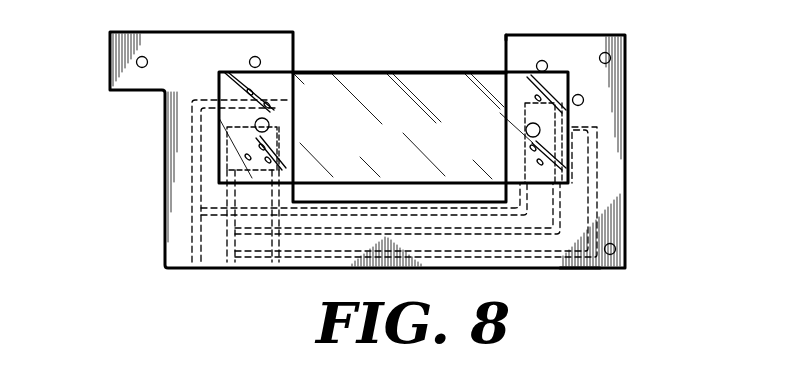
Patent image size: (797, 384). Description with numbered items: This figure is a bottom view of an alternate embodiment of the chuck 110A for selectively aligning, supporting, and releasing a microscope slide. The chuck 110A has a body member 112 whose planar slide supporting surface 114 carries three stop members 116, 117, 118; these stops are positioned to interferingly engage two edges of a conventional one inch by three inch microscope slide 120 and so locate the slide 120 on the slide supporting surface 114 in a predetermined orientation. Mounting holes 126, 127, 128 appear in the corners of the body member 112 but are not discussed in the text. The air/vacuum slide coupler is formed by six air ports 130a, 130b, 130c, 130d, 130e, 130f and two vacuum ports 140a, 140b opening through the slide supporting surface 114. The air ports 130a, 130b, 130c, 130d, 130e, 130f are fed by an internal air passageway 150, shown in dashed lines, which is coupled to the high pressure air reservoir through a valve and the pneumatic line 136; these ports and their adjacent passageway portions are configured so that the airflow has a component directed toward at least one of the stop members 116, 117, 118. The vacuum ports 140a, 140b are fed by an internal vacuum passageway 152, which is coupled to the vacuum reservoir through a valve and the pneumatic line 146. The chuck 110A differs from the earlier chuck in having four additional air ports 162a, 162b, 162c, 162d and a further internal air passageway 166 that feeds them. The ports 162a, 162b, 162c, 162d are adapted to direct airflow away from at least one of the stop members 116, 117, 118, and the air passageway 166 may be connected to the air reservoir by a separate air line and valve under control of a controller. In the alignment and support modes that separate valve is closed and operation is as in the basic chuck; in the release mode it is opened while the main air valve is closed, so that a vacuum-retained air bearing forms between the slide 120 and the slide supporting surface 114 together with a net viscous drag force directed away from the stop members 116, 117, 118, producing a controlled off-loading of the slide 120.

The chuck 110A is at (636, 199).
The body member 112 is at (577, 33).
The slide supporting surface 114 is at (573, 269).
The stop member 116 is at (260, 62).
The stop member 117 is at (537, 64).
The stop member 118 is at (584, 100).
The microscope slide 120 is at (421, 72).
The mounting hole 126 is at (136, 62).
The mounting hole 127 is at (615, 249).
The mounting hole 128 is at (610, 58).
The air port 130a is at (242, 86).
The air port 130b is at (254, 92).
The air port 130c is at (246, 158).
The air port 130d is at (271, 159).
The air port 130e is at (535, 98).
The air port 130f is at (530, 148).
The pneumatic line 136 is at (193, 268).
The vacuum port 140a is at (269, 125).
The vacuum port 140b is at (526, 130).
The pneumatic line 146 is at (223, 268).
The air passageway 150 is at (185, 186).
The vacuum passageway 152 is at (335, 257).
The air port 162a is at (271, 106).
The air port 162b is at (259, 146).
The air port 162c is at (540, 103).
The air port 162d is at (543, 166).
The air passageway 166 is at (462, 236).